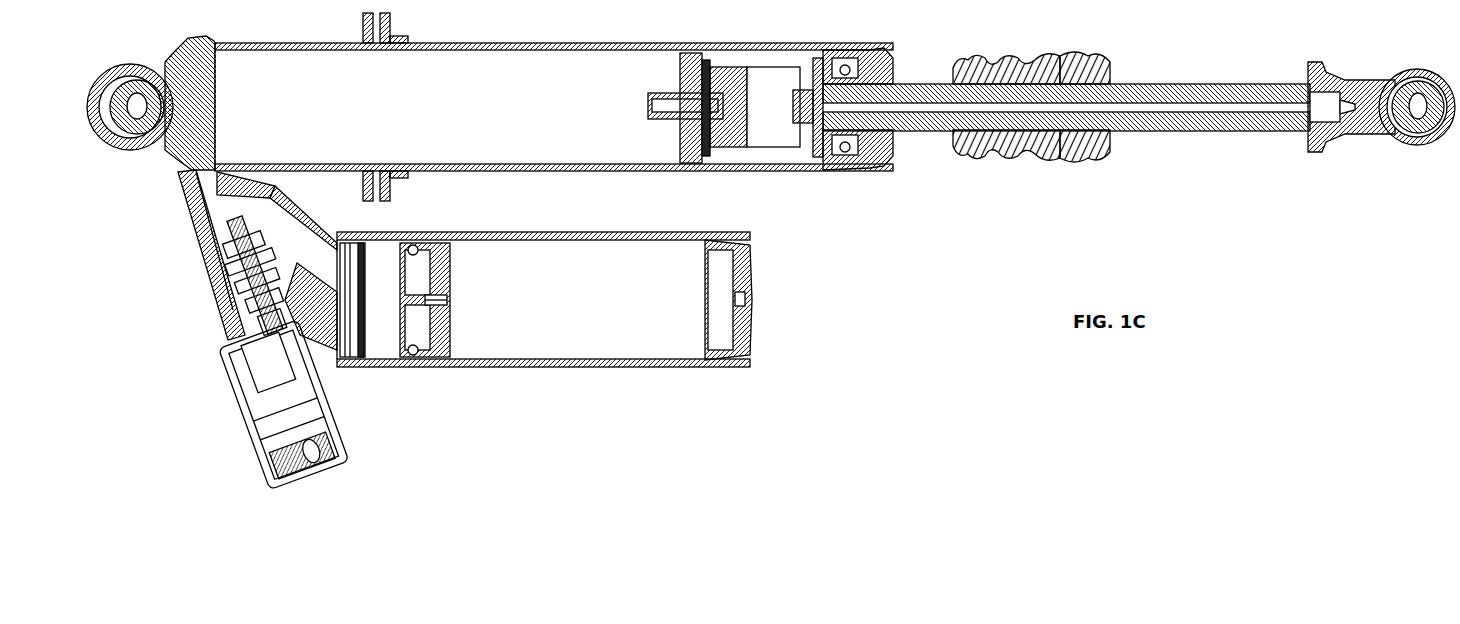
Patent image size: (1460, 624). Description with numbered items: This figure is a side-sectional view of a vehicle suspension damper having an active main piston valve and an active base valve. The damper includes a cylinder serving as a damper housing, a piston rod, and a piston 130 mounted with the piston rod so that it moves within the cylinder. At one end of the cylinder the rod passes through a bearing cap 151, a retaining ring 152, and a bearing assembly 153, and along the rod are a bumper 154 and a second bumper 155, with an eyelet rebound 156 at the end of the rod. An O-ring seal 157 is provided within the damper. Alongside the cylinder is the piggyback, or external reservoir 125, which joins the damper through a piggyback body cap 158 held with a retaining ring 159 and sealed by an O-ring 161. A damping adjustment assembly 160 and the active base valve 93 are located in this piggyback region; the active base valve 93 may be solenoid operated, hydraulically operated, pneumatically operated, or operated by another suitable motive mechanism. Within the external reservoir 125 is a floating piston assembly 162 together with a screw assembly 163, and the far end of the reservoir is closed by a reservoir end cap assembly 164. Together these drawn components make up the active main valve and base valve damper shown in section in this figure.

The O-ring seal 157 is at (217, 103).
The piston 130 is at (703, 62).
The bearing cap 151 is at (888, 62).
The retaining ring 152 is at (848, 172).
The bearing assembly 153 is at (872, 150).
The bumper 154 is at (1023, 163).
The bumper 155 is at (1085, 165).
The eyelet rebound 156 is at (1318, 152).
The piggyback body cap 158 is at (180, 185).
The retaining ring 159 is at (220, 318).
The damping adjustment assembly 160 is at (265, 398).
The active base valve 93 is at (318, 466).
The O-ring 161 is at (340, 365).
The external reservoir 125 is at (372, 367).
The floating piston assembly 162 is at (437, 367).
The screw assembly 163 is at (442, 302).
The reservoir end cap assembly 164 is at (732, 360).